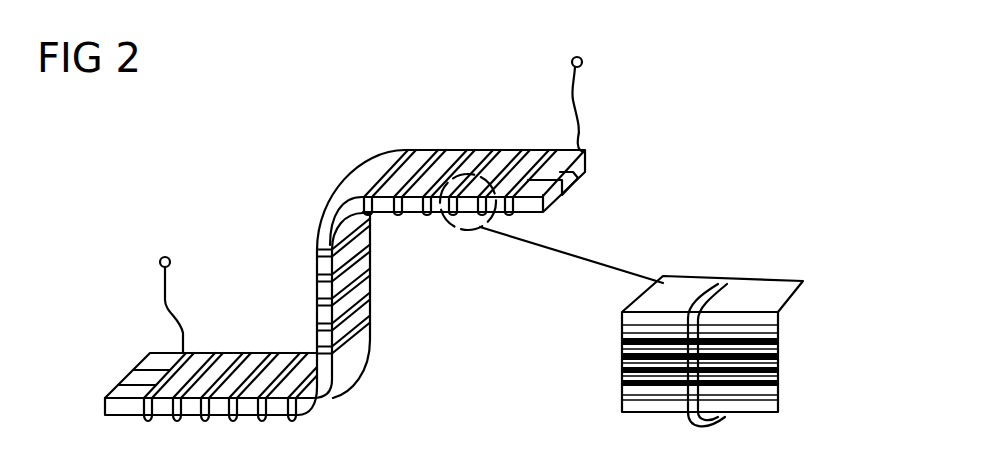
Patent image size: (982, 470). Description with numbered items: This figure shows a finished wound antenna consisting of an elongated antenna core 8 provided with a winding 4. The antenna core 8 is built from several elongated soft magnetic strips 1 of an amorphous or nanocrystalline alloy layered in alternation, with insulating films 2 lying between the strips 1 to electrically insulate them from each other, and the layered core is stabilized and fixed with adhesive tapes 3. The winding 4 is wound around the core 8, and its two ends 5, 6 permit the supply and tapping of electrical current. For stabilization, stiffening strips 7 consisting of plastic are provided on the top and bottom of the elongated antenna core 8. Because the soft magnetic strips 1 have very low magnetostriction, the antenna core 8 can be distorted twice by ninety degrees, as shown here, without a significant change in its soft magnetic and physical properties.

The soft magnetic strips 1 is at (763, 332).
The insulating films 2 is at (777, 350).
The adhesive tapes 3 is at (565, 180).
The winding 4 is at (492, 148).
The end of winding 5 is at (184, 265).
The end of winding 6 is at (572, 97).
The stiffening strips 7 is at (763, 318).
The antenna core 8 is at (353, 357).